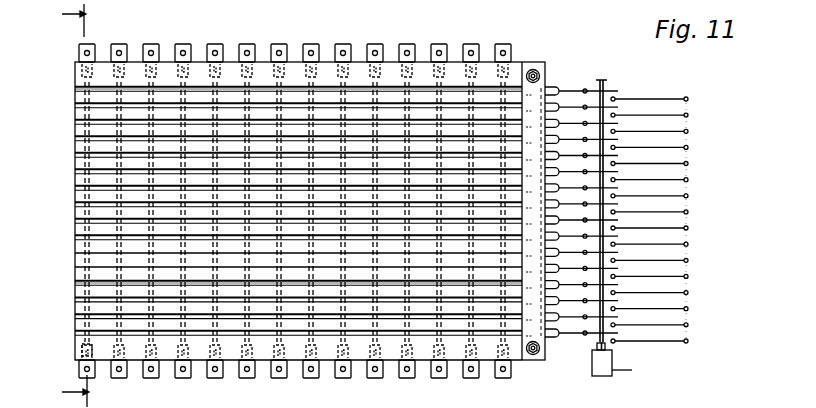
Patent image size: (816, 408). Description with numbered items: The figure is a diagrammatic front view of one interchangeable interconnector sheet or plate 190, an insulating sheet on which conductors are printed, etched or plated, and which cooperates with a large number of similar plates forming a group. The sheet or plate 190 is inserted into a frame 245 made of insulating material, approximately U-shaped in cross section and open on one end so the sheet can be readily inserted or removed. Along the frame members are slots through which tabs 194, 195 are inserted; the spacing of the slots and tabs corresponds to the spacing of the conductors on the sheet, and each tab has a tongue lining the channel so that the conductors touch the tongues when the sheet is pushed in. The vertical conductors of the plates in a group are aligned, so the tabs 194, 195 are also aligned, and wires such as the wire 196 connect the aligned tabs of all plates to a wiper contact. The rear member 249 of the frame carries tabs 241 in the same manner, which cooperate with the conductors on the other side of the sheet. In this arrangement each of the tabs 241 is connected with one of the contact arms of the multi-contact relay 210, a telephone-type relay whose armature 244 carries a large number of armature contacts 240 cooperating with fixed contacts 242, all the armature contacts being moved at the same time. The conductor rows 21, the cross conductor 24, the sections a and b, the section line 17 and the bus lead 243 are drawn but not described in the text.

The section line 17- 17 is at (61, 205).
The tab 195 is at (118, 45).
The tab 194 is at (150, 379).
The wire 196 is at (298, 384).
The wire group a is at (80, 113).
The wire group b is at (83, 290).
The conductor wire 21 is at (103, 142).
The interconnector sheet or plate 190 is at (83, 198).
The cross conductor 24 is at (83, 229).
The frame 245 is at (84, 345).
The tab 241 is at (550, 91).
The armature 244 is at (605, 80).
The fixed contact 242 is at (615, 117).
The armature contact 240 is at (614, 300).
The multi-contact relay 210 is at (612, 359).
The rear member of the frame 249 is at (538, 362).
The bus bar lead 243 is at (599, 316).